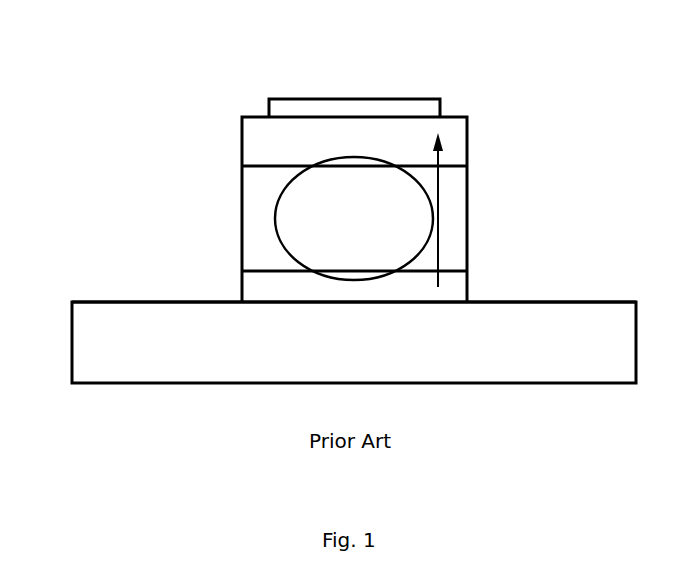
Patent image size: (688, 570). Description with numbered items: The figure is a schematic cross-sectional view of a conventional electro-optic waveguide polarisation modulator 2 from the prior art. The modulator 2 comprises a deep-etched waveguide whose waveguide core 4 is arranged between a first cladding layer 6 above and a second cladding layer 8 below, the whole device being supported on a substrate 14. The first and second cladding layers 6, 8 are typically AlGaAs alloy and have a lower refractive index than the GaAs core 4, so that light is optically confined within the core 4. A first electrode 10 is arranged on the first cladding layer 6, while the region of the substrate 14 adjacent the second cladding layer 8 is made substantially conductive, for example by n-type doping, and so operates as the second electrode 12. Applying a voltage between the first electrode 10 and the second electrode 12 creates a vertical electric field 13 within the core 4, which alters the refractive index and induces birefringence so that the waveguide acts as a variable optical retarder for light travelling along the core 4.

The waveguide polarisation modulator 2 is at (96, 117).
The waveguide core 4 is at (253, 213).
The first cladding layer 6 is at (257, 142).
The second cladding layer 8 is at (250, 283).
The first electrode 10 is at (420, 110).
The second electrode 12 is at (475, 312).
The vertical electric field 13 is at (447, 150).
The substrate 14 is at (177, 352).